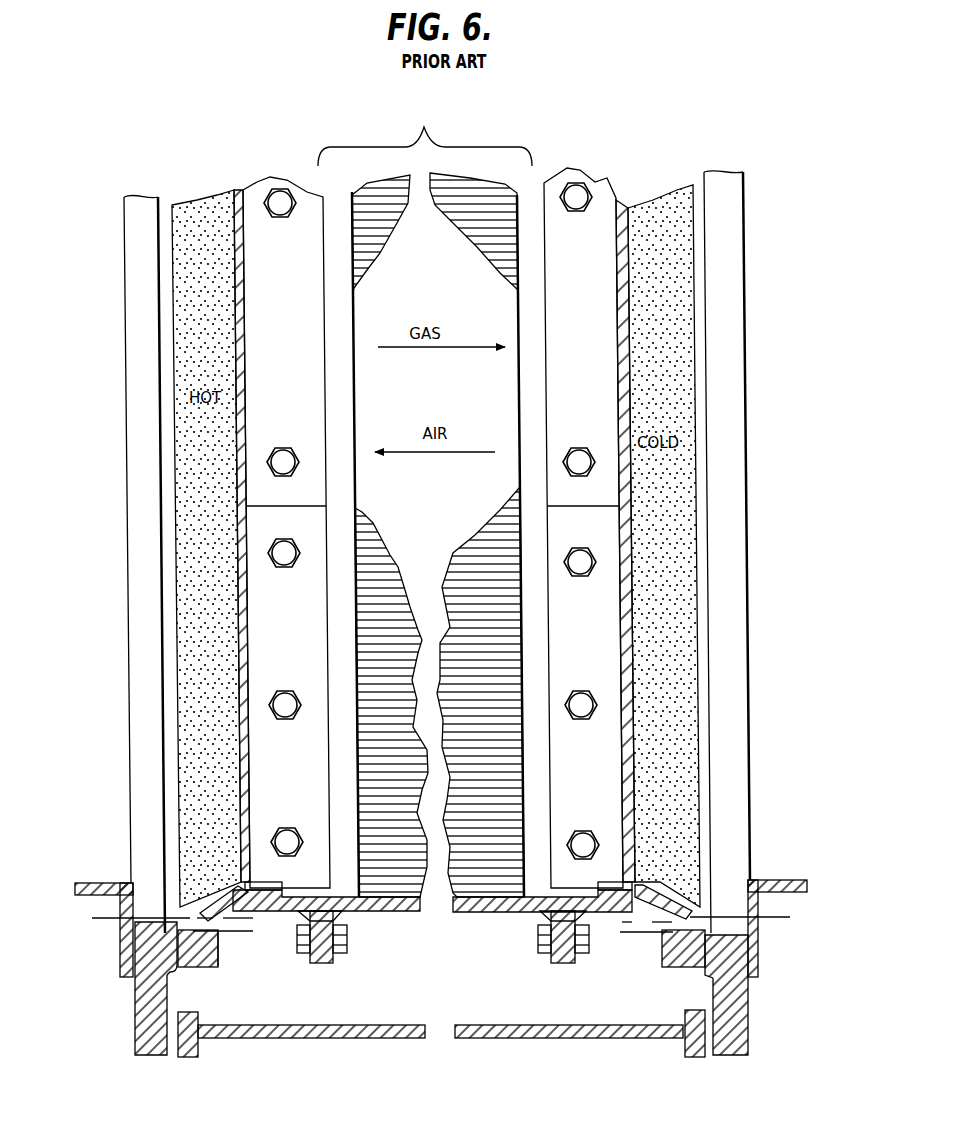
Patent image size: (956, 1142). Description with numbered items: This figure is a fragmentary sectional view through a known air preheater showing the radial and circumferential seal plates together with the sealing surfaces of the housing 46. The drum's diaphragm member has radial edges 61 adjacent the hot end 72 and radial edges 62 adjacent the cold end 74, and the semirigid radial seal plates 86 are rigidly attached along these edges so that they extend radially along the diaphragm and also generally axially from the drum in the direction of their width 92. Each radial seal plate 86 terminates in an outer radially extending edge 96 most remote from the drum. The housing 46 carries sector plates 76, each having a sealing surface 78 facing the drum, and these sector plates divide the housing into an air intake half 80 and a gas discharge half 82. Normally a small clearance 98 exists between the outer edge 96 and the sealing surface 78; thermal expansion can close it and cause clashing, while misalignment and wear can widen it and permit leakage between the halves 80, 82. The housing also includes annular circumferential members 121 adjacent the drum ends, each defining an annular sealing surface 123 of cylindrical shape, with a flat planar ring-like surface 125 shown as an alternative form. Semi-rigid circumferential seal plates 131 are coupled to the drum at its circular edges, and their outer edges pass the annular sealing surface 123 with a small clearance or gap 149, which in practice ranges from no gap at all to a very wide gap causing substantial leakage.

The housing 46 is at (738, 1012).
The radial edges 61 is at (128, 550).
The radial edges 62 is at (687, 376).
The hot end 72 is at (207, 345).
The cold end 74 is at (697, 411).
The sector plates 76 is at (153, 515).
The sealing surface 78 is at (160, 648).
The air intake half 80 is at (445, 496).
The gas discharge half 82 is at (446, 298).
The radial seal plates 86 is at (257, 588).
The width 92 is at (703, 665).
The outer radially extending edge 96 is at (697, 563).
The clearance 98 is at (207, 832).
The annular circumferential members 121 is at (193, 967).
The annular sealing surface 123 is at (143, 935).
The surface 125 is at (223, 957).
The circumferential seal plates 131 is at (215, 897).
The clearance or gap 149 is at (238, 903).